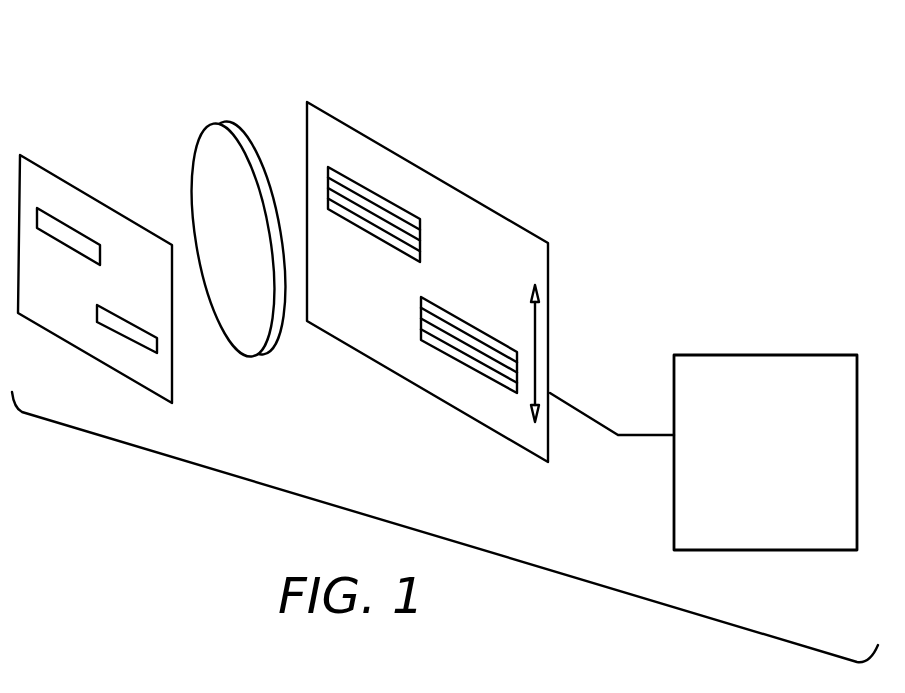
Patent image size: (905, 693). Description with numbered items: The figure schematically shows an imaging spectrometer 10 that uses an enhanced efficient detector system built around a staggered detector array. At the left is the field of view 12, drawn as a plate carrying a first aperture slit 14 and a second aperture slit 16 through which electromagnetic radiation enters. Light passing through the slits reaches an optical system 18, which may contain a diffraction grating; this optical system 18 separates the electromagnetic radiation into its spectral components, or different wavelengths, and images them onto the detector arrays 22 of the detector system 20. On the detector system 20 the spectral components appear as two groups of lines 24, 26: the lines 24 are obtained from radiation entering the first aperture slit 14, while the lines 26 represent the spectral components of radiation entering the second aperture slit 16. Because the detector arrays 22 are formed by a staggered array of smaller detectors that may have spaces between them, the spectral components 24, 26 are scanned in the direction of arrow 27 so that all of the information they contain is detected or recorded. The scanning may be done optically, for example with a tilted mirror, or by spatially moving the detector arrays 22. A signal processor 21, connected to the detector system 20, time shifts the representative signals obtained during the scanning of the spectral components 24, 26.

The imaging spectrometer 10 is at (285, 82).
The field of view 12 is at (61, 177).
The first aperture slit 14 is at (50, 238).
The second aperture slit 16 is at (122, 337).
The optical system 18 is at (256, 356).
The detector system 20 is at (512, 218).
The signal processor 21 is at (730, 355).
The detector arrays 22 is at (367, 223).
The lines representing spectral components 24 is at (385, 208).
The lines representing spectral components 26 is at (453, 323).
The arrow 27 is at (537, 335).